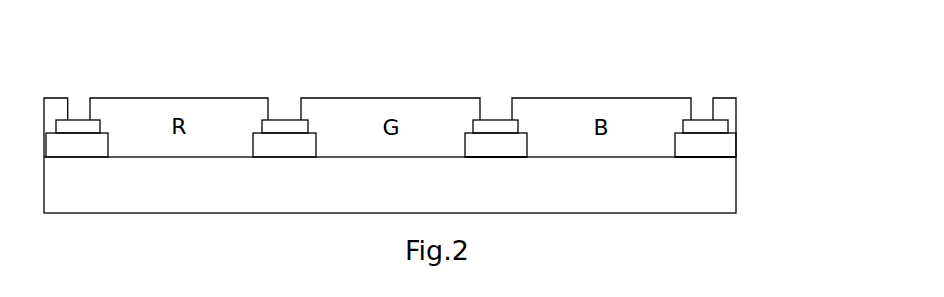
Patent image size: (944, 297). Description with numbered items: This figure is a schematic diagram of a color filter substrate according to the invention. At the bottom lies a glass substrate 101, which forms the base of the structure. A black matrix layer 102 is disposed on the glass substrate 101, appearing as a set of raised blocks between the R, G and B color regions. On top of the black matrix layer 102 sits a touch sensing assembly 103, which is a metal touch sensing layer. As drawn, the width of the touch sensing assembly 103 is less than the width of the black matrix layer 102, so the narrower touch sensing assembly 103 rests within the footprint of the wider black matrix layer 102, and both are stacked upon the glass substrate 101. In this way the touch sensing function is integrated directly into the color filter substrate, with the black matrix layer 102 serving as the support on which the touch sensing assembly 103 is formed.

The glass substrate 101 is at (707, 198).
The black matrix layer 102 is at (705, 144).
The touch sensing assembly 103 is at (495, 118).